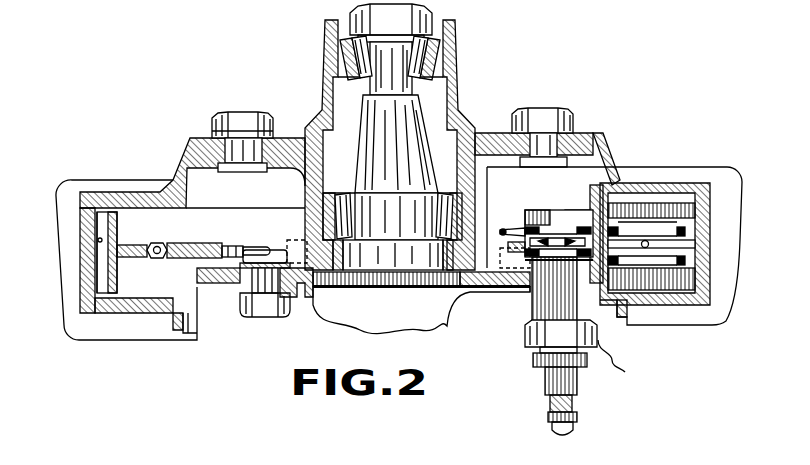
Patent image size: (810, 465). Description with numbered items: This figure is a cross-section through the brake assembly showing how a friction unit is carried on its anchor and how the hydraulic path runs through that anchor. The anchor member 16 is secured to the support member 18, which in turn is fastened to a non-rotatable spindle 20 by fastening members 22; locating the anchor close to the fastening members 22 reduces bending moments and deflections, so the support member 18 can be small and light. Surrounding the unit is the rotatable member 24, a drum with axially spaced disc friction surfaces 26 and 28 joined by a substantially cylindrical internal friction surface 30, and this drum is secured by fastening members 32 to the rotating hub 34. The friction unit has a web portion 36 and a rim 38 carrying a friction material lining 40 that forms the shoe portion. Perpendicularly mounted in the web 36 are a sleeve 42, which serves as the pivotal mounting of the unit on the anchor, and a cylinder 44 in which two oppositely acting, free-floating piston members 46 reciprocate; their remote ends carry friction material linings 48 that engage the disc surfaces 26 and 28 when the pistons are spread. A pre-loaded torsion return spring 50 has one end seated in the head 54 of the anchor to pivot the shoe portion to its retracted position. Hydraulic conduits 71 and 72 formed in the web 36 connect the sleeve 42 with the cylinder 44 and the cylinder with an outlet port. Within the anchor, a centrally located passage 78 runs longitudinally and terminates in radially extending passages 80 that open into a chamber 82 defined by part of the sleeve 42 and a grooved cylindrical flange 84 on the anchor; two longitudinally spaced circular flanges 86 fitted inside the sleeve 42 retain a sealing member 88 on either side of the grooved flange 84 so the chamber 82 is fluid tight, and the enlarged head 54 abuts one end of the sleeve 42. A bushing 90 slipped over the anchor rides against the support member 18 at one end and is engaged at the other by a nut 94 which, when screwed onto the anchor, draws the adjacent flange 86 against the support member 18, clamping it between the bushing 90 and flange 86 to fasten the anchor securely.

The anchor member 16 is at (528, 322).
The support member 18 is at (227, 285).
The spindle 20 is at (407, 310).
The fastening members 22 is at (270, 308).
The rotatable member 24 is at (65, 202).
The disc friction surface 26 is at (147, 300).
The disc friction surface 28 is at (130, 207).
The internal friction surface 30 is at (98, 241).
The fastening members 32 is at (243, 112).
The hub 34 is at (457, 63).
The web portion 36 is at (135, 248).
The rim 38 is at (117, 276).
The friction material lining 40 is at (96, 276).
The sleeve 42 is at (528, 256).
The cylinder 44 is at (688, 254).
The piston members 46 is at (635, 230).
The friction material linings 48 is at (658, 208).
The torsion return spring 50 is at (597, 192).
The head 54 is at (585, 212).
The hydraulic conduit 71 is at (690, 244).
The hydraulic conduit 72 is at (166, 247).
The passage 78 is at (537, 360).
The radially extending passages 80 is at (521, 203).
The chamber 82 is at (515, 233).
The cylindrical flange 84 is at (562, 224).
The circular flanges 86 is at (549, 228).
The sealing member 88 is at (537, 313).
The bushing 90 is at (540, 350).
The nut 94 is at (626, 363).